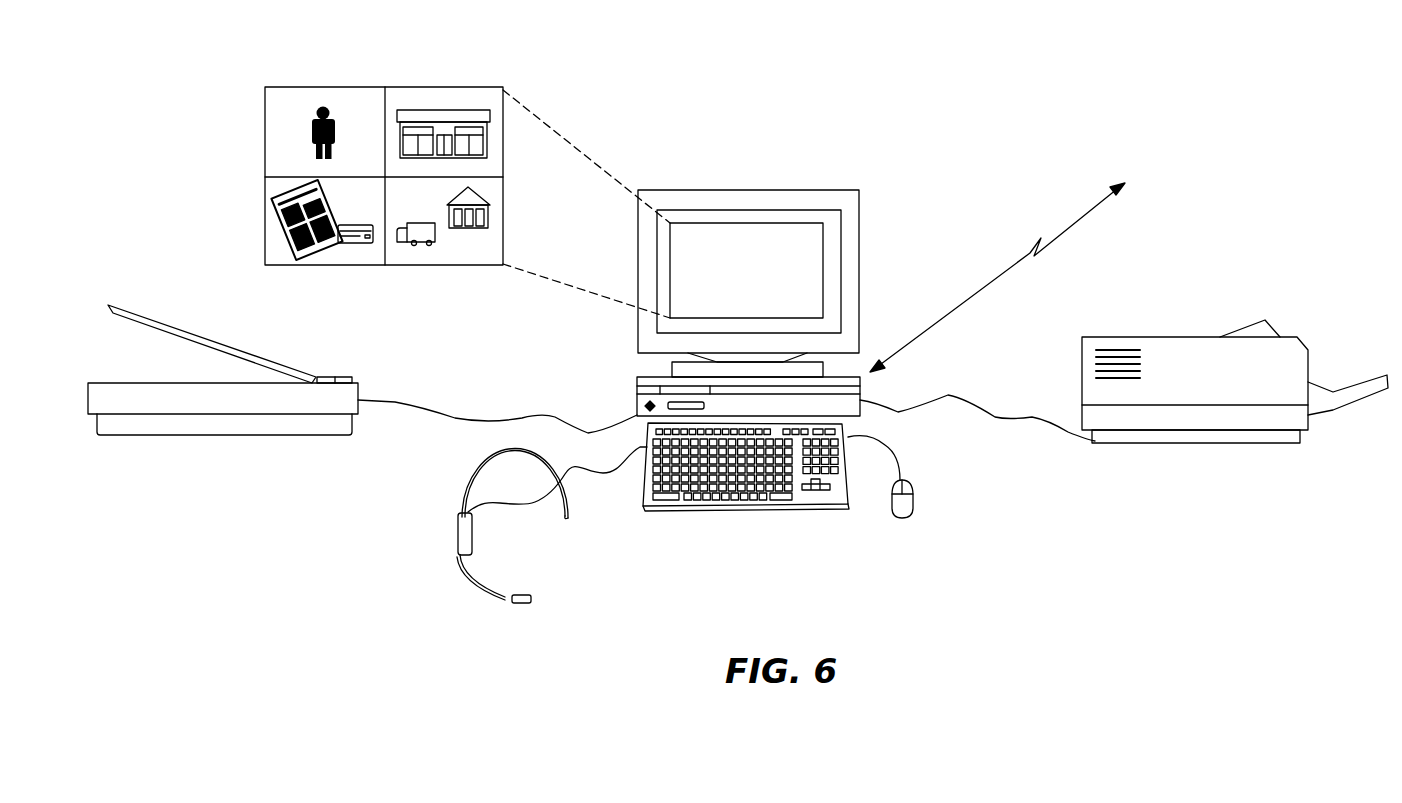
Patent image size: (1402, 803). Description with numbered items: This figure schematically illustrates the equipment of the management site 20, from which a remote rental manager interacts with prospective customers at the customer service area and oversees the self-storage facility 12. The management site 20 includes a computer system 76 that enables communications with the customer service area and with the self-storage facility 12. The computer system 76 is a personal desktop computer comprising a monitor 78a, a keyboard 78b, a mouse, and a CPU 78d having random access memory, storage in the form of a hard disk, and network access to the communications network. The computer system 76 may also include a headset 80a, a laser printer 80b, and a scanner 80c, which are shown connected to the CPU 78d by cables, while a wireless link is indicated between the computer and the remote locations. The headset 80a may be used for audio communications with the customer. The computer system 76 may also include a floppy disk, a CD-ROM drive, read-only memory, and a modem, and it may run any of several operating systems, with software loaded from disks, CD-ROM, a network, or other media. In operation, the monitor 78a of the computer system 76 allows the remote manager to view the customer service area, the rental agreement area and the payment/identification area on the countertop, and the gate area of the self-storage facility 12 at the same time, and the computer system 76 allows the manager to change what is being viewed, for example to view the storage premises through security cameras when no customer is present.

The self-storage facility 12 is at (755, 283).
The management site 20 is at (825, 149).
The computer system 76 is at (995, 276).
The monitor 78a is at (897, 518).
The keyboard 78b is at (683, 510).
The CPU 78d is at (645, 377).
The headset 80a is at (458, 535).
The laser printer 80b is at (1128, 443).
The scanner 80c is at (195, 435).